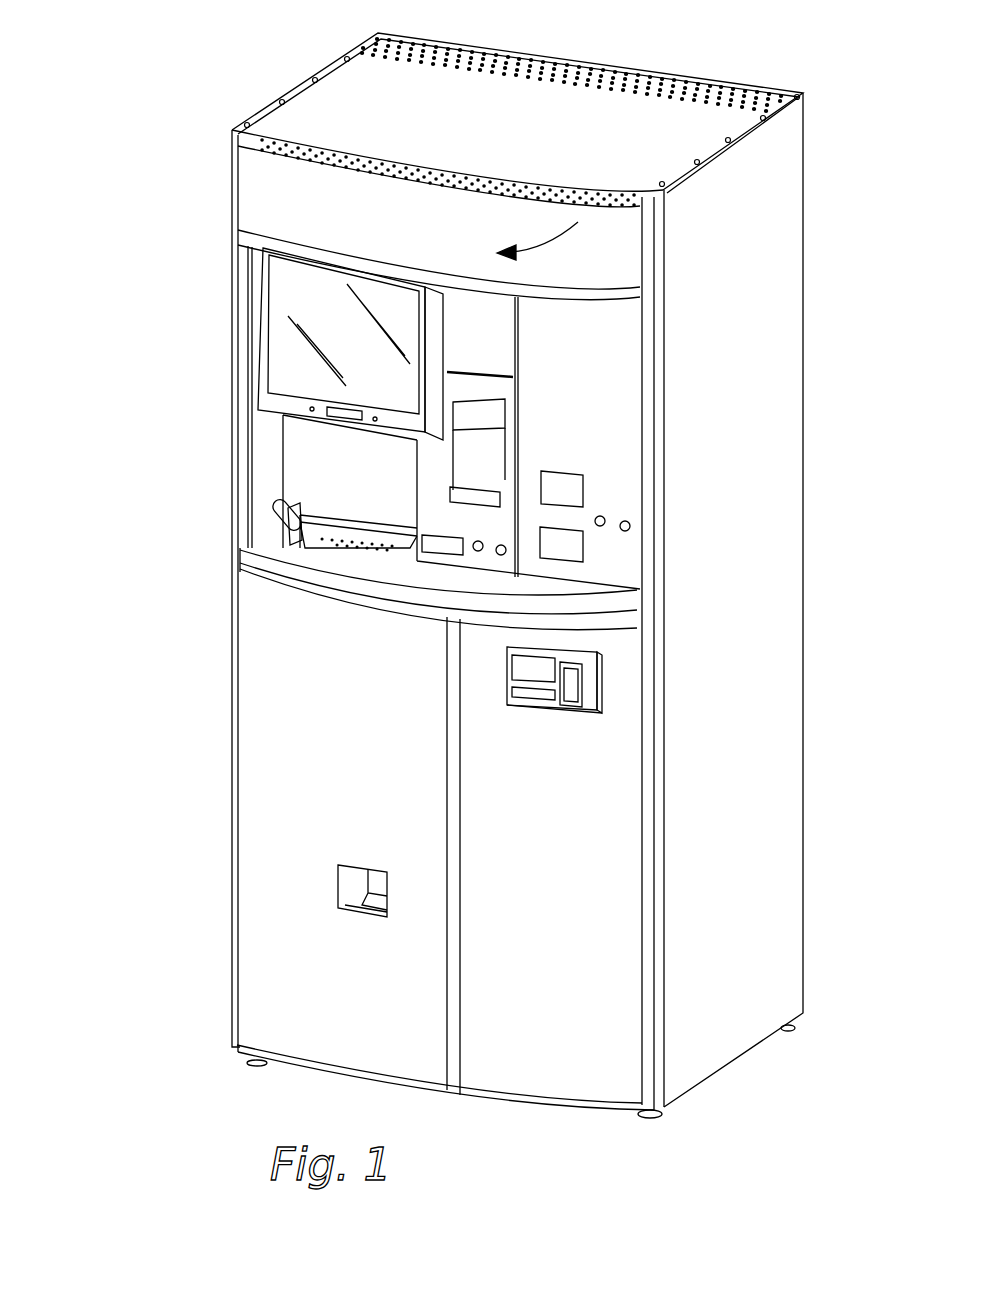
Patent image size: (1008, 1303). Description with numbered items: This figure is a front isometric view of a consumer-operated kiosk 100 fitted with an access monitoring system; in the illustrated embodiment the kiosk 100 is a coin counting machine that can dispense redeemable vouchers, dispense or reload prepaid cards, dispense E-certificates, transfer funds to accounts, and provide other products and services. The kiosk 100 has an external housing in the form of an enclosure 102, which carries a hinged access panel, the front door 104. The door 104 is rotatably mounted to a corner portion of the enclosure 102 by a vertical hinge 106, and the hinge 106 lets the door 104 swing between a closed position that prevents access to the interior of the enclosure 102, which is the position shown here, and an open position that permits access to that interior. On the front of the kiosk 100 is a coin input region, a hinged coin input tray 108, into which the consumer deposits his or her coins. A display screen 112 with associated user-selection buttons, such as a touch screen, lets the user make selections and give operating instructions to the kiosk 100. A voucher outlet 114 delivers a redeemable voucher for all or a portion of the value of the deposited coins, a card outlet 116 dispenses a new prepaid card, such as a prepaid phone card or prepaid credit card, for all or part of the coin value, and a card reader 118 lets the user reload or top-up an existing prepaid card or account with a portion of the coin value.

The consumer-operated kiosk 100 is at (481, 598).
The enclosure 102 is at (792, 380).
The front door 104 is at (310, 757).
The vertical hinge 106 is at (233, 190).
The hinged coin input tray 108 is at (283, 530).
The display screen 112 is at (313, 337).
The voucher outlet 114 is at (470, 463).
The card outlet 116 is at (558, 470).
The card reader 118 is at (542, 523).